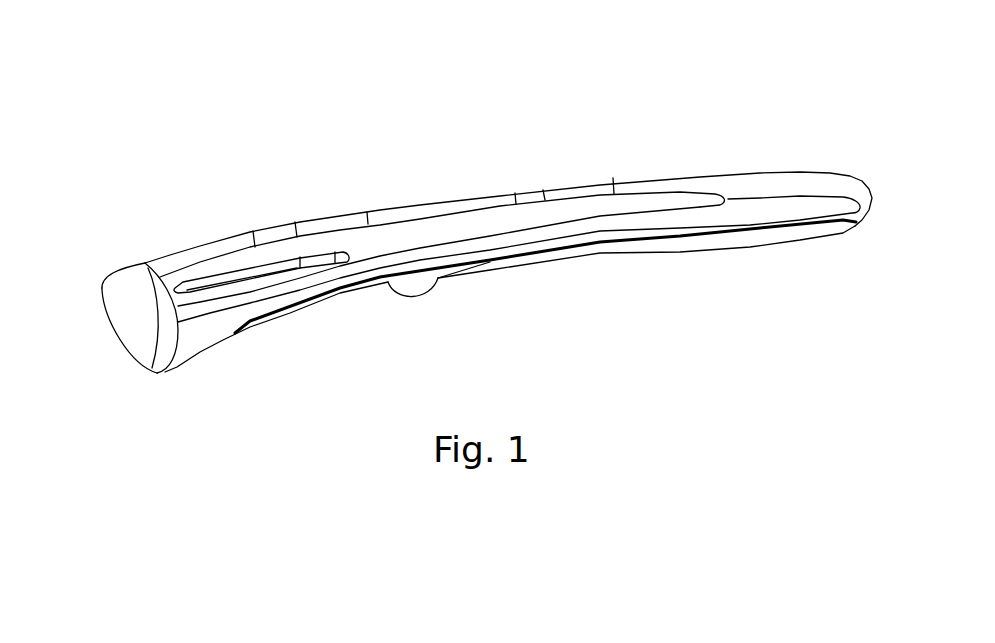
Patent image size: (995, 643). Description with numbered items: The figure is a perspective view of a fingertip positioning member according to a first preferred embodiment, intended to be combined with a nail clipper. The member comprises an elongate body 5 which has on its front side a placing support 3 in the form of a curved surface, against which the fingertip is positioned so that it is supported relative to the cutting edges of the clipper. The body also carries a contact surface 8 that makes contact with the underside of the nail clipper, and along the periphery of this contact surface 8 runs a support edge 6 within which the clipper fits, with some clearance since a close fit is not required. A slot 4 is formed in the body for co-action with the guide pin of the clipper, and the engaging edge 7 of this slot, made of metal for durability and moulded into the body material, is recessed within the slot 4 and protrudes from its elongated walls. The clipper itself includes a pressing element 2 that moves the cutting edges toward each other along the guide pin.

The pressing element 2 is at (263, 225).
The placing support 3 is at (148, 323).
The slot 4 is at (222, 268).
The elongate body 5 is at (457, 219).
The support edge 6 is at (358, 212).
The engaging edge 7 is at (827, 163).
The contact surface 8 is at (615, 195).